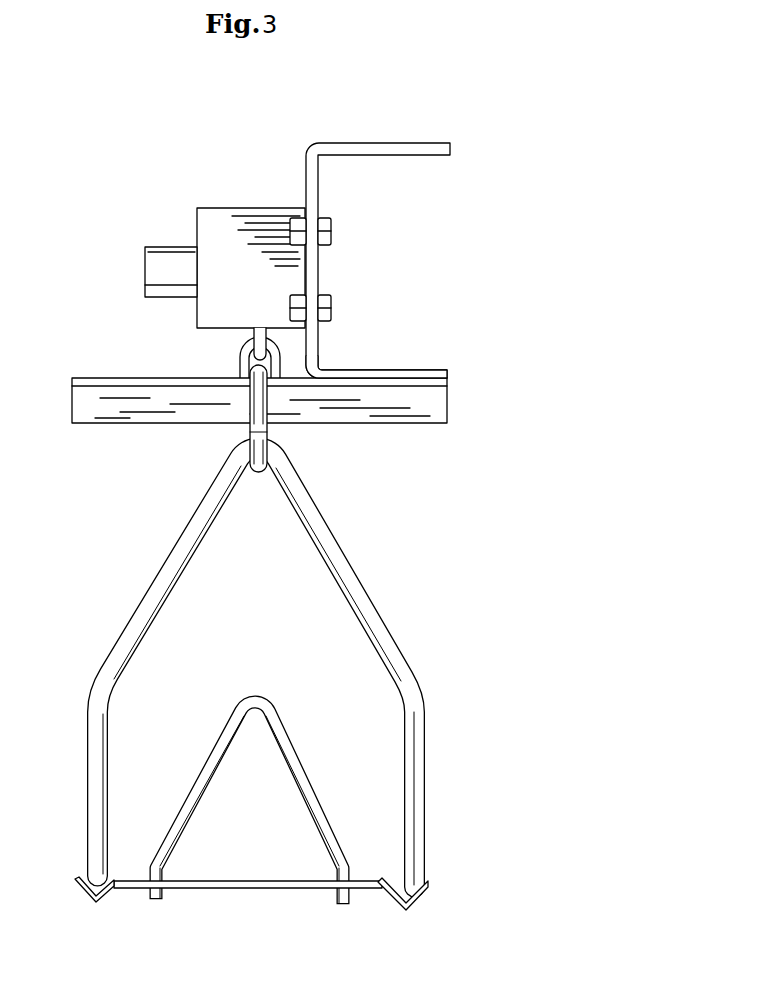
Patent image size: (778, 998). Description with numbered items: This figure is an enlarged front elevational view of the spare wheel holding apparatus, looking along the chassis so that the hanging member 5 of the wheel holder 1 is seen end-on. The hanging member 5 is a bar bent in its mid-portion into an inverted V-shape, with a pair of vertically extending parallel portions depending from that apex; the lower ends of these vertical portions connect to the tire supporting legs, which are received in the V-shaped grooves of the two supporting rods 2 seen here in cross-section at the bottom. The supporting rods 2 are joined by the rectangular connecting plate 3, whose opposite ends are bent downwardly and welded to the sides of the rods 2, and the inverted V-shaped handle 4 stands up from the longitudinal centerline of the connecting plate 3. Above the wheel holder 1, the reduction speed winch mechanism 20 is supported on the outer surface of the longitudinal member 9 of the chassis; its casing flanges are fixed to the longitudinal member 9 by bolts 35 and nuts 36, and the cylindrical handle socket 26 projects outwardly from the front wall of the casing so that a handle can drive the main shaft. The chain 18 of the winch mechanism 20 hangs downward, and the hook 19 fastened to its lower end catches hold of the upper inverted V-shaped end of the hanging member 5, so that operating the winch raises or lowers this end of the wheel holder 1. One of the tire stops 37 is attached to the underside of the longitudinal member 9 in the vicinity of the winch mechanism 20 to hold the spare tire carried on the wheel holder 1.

The wheel holder 1 is at (245, 706).
The supporting rods 2 is at (80, 893).
The connecting plate 3 is at (210, 888).
The handle 4 is at (315, 833).
The hanging member 5 is at (137, 605).
The longitudinal member 9 is at (365, 143).
The chain 18 is at (240, 360).
The hook 19 is at (250, 432).
The winch mechanism 20 is at (210, 208).
The handle socket 26 is at (148, 247).
The bolts 35 is at (328, 310).
The nuts 36 is at (292, 297).
The tire stops 37 is at (88, 378).